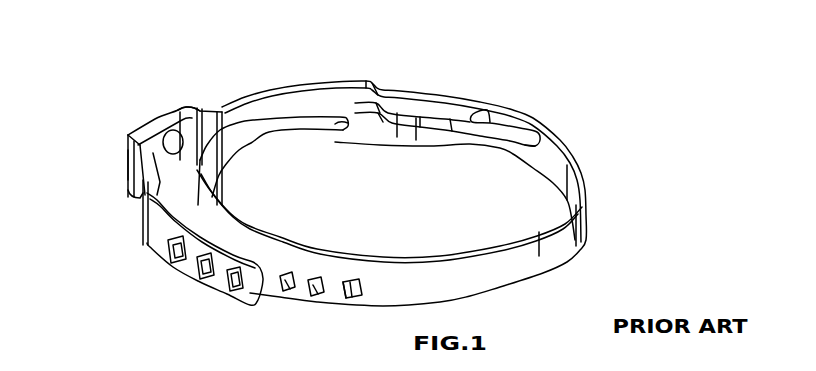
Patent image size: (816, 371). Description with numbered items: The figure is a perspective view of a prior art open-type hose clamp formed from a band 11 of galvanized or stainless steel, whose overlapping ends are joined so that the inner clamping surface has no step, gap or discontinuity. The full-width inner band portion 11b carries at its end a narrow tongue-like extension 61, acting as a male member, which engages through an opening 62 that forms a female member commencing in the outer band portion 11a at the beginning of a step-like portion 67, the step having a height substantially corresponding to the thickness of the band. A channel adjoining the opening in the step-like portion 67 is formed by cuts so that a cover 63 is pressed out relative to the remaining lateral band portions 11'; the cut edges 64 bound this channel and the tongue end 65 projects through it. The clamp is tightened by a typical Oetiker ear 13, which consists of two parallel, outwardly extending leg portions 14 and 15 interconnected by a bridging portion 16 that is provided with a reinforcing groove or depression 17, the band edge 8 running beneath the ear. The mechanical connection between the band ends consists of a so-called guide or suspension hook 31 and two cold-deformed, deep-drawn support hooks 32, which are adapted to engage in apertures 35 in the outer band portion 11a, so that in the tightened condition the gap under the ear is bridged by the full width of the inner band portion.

The band edge 8 is at (128, 183).
The clamp band 11 is at (425, 193).
The lateral band portions 11' is at (447, 98).
The outer band portion 11a is at (147, 225).
The inner band portion 11b is at (260, 235).
The Oetiker ear 13 is at (130, 93).
The leg portion 14 is at (128, 163).
The leg portion 15 is at (200, 107).
The bridging portion 16 is at (147, 132).
The reinforcing groove or depression 17 is at (176, 122).
The guide or suspension hook 31 is at (348, 298).
The support hooks 32 is at (303, 290).
The apertures 35 is at (225, 293).
The tongue-like extension 61 is at (298, 135).
The opening 62 is at (457, 137).
The channel/cover 63 is at (424, 138).
The lateral shoulders 64 is at (355, 100).
The tongue end 65 is at (533, 140).
The step-like portion 67 is at (396, 92).